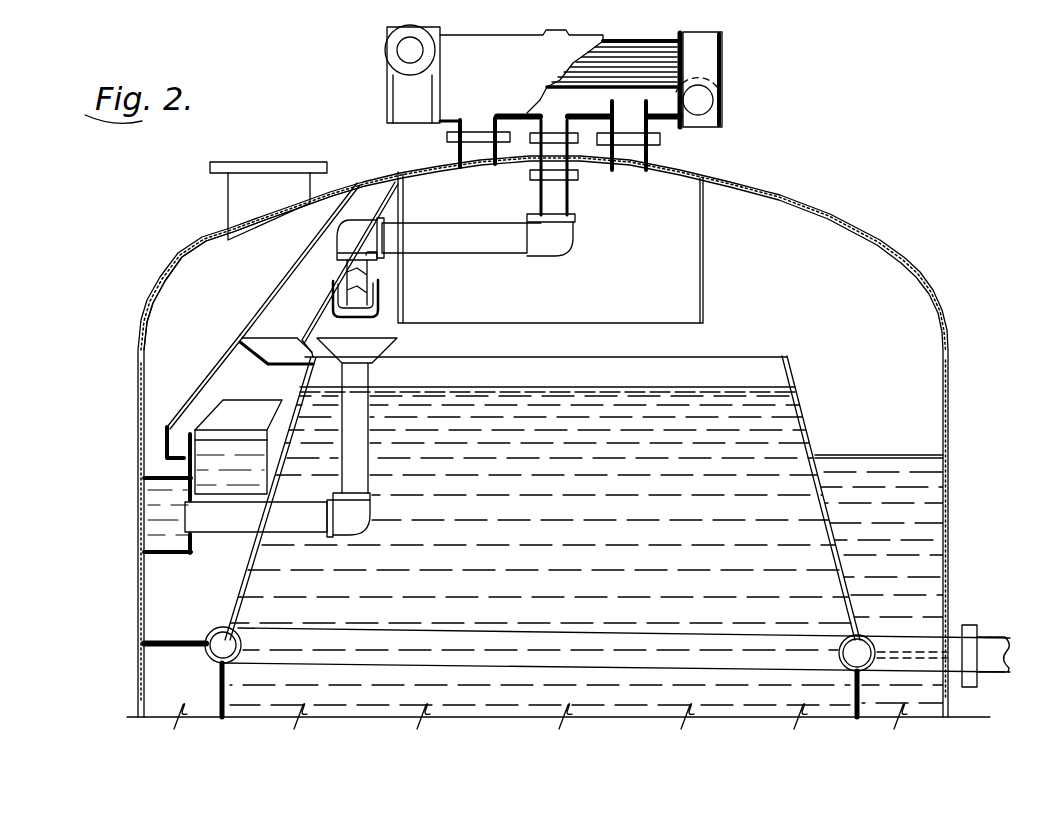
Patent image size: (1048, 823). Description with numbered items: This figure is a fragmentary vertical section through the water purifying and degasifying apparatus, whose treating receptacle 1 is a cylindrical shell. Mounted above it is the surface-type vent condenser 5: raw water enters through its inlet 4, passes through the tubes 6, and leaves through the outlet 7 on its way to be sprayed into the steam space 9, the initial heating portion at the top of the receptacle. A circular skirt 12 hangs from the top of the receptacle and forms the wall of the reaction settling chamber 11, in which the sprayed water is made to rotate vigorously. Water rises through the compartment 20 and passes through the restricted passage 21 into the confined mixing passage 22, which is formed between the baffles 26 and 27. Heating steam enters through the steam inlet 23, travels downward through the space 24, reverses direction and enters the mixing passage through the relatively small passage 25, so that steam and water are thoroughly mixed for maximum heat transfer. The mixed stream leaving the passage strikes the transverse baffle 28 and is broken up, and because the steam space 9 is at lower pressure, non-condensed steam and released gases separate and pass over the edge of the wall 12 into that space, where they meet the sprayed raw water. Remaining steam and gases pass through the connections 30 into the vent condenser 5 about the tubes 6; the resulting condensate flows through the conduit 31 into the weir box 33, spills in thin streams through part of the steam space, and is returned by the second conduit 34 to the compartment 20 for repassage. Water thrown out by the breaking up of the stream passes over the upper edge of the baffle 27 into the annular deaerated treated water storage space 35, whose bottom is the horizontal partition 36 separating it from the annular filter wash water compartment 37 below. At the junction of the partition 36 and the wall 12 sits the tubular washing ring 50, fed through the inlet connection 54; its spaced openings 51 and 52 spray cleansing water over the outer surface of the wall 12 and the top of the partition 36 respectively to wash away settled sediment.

The treating receptacle 1 is at (948, 311).
The inlet 4 is at (706, 103).
The vent condenser 5 is at (624, 39).
The tubes 6 is at (648, 48).
The outlet 7 is at (408, 50).
The steam space 9 is at (860, 253).
The reaction settling chamber 11 is at (765, 378).
The circular skirt 12 is at (704, 261).
The compartment 20 is at (167, 516).
The restricted passage 21 is at (186, 464).
The confined mixing passage 22 is at (190, 388).
The steam inlet 23 is at (242, 192).
The space 24 is at (170, 328).
The relatively small passage 25 is at (183, 446).
The baffle 26 is at (270, 288).
The baffle 27 is at (230, 421).
The baffle 28 is at (272, 343).
The connections 30 is at (473, 152).
The conduit 31 is at (462, 233).
The weir box 33 is at (381, 293).
The second conduit 34 is at (357, 374).
The deaerated treated water storage space 35 is at (923, 504).
The horizontal partition 36 is at (173, 647).
The annular filter wash water compartment 37 is at (160, 708).
The washing ring 50 is at (862, 650).
The spaced openings 51 is at (210, 631).
The spaced openings 52 is at (208, 627).
The inlet connection 54 is at (993, 642).